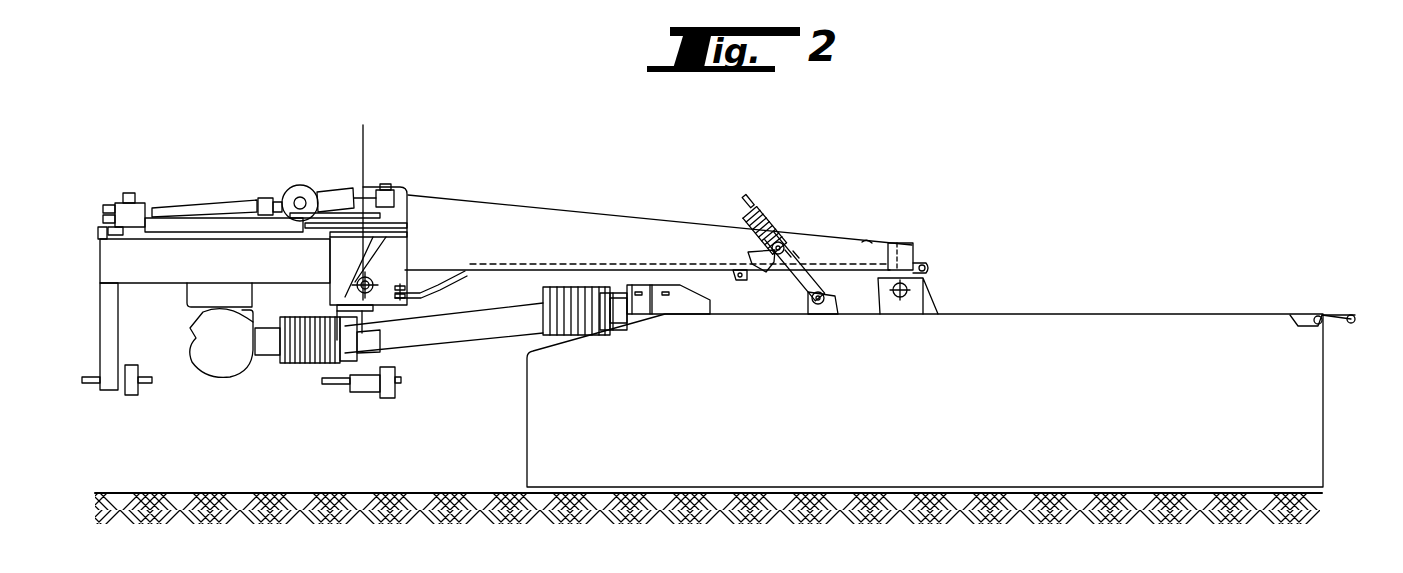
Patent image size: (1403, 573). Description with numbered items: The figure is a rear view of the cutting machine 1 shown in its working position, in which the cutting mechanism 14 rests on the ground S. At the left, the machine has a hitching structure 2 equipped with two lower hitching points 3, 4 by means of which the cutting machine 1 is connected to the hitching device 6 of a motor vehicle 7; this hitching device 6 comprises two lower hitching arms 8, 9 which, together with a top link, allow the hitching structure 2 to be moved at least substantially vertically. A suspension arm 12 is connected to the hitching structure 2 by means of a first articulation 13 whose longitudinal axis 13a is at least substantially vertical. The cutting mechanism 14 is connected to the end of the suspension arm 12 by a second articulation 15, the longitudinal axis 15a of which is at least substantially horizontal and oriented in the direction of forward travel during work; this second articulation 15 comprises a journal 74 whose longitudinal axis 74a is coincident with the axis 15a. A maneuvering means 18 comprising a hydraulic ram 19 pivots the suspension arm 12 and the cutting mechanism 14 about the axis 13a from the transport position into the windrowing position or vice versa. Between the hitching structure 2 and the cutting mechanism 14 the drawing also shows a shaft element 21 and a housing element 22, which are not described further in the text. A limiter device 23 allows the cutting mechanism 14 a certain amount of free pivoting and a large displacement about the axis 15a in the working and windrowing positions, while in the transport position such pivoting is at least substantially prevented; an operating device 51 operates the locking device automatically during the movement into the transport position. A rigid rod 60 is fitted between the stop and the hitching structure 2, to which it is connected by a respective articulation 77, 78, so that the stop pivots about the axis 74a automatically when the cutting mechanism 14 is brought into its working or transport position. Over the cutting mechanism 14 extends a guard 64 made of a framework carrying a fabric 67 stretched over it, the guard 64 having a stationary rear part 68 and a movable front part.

The cutting machine 1 is at (1134, 308).
The hitching structure 2 is at (98, 343).
The lower hitching point 3 is at (398, 392).
The lower hitching point 4 is at (150, 370).
The hitching device 6 is at (126, 404).
The motor vehicle 7 is at (385, 405).
The lower hitching arm 8 is at (396, 375).
The lower hitching arm 9 is at (150, 370).
The suspension arm 12 is at (556, 225).
The first articulation 13 is at (358, 252).
The longitudinal axis of the first articulation 13a is at (365, 128).
The cutting mechanism 14 is at (1243, 497).
The second articulation 15 is at (932, 286).
The longitudinal axis of the second articulation 15a is at (910, 291).
The maneuvering means 18 is at (160, 201).
The hydraulic ram 19 is at (243, 225).
The drive shaft 21 is at (488, 325).
The housing 22 is at (673, 318).
The limiter device 23 is at (773, 203).
The operating device 51 is at (463, 292).
The rigid rod 60 is at (464, 271).
The guard 64 is at (1217, 310).
The fabric 67 is at (1113, 462).
The rear part 68 is at (1325, 412).
The journal 74 is at (898, 298).
The longitudinal axis of the journal 74a is at (986, 285).
The articulation 77 is at (922, 262).
The articulation 78 is at (403, 284).
The ground S is at (333, 492).